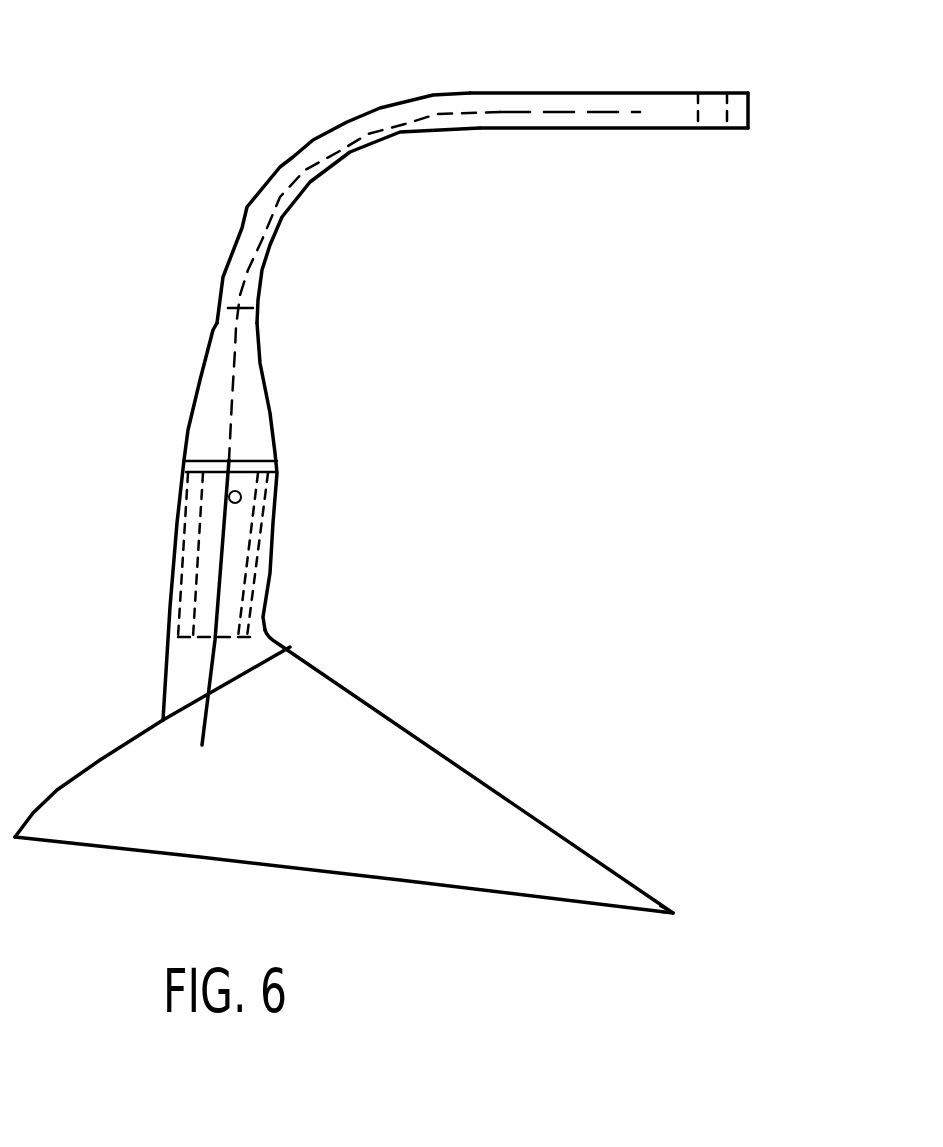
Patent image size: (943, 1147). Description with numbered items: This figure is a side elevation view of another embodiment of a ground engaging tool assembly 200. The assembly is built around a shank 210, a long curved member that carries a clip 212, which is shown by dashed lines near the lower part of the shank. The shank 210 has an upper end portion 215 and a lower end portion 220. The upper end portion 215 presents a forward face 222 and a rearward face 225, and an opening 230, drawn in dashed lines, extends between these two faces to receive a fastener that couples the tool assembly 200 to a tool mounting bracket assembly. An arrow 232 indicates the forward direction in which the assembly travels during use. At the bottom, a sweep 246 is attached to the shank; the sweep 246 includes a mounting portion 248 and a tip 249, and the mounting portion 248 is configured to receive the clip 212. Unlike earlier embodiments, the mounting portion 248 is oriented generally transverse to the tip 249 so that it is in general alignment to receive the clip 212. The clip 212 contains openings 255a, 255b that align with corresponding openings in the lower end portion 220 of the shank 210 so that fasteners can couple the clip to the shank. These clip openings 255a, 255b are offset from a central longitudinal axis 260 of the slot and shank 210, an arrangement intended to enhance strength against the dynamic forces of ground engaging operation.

The ground engaging tool assembly 200 is at (105, 150).
The shank 210 is at (402, 163).
The clip 212 is at (227, 552).
The upper end portion 215 is at (718, 158).
The lower end portion 220 is at (305, 453).
The forward face 222 is at (610, 128).
The rearward face 225 is at (565, 95).
The opening 230 is at (758, 100).
The arrow 232 is at (582, 378).
The sweep 246 is at (510, 680).
The mounting portion 248 is at (283, 640).
The tip 249 is at (660, 905).
The clip opening 255a is at (225, 500).
The clip opening 255b is at (240, 590).
The central longitudinal axis 260 is at (202, 745).